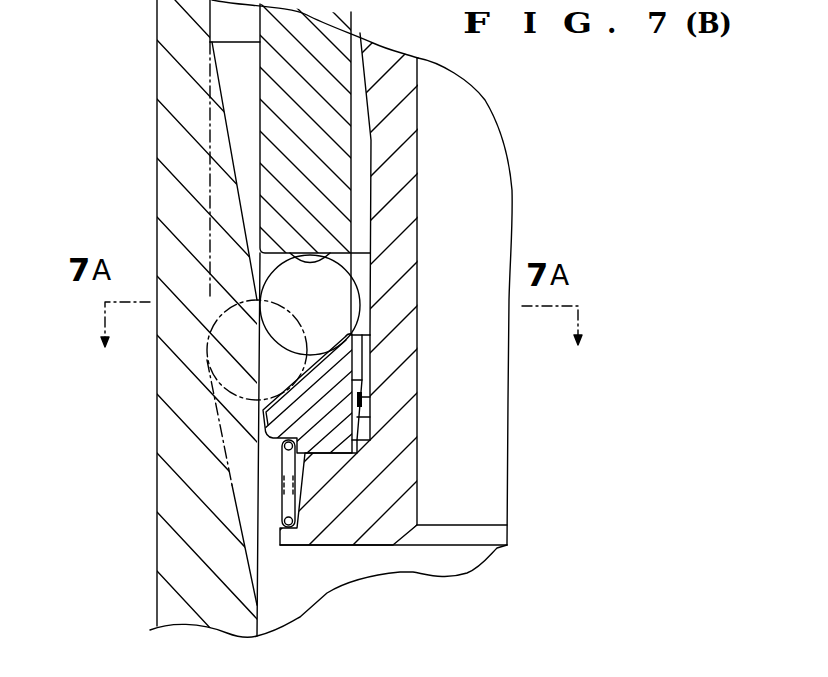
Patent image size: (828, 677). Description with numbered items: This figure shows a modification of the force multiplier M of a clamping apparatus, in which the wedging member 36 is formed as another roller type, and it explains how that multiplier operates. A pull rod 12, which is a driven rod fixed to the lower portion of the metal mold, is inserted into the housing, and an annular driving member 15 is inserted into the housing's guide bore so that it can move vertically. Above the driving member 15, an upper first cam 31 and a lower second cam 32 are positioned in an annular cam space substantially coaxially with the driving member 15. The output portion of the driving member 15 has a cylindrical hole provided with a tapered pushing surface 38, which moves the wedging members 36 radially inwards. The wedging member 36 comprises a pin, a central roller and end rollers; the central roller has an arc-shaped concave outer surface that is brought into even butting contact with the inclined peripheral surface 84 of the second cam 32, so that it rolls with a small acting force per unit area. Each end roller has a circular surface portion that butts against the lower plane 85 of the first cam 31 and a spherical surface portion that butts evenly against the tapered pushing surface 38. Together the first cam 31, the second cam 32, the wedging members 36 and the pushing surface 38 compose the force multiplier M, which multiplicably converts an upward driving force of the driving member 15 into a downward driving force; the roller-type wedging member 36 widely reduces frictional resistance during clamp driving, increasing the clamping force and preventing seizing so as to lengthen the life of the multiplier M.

The pull rod 12 is at (400, 472).
The driving member 15 is at (157, 428).
The first cam 31 is at (362, 101).
The second cam 32 is at (360, 394).
The wedging member 36 is at (307, 332).
The tapered pushing surface 38 is at (222, 104).
The inclined peripheral surface 84 is at (330, 354).
The lower plane 85 is at (365, 212).
The force multiplier M is at (481, 237).